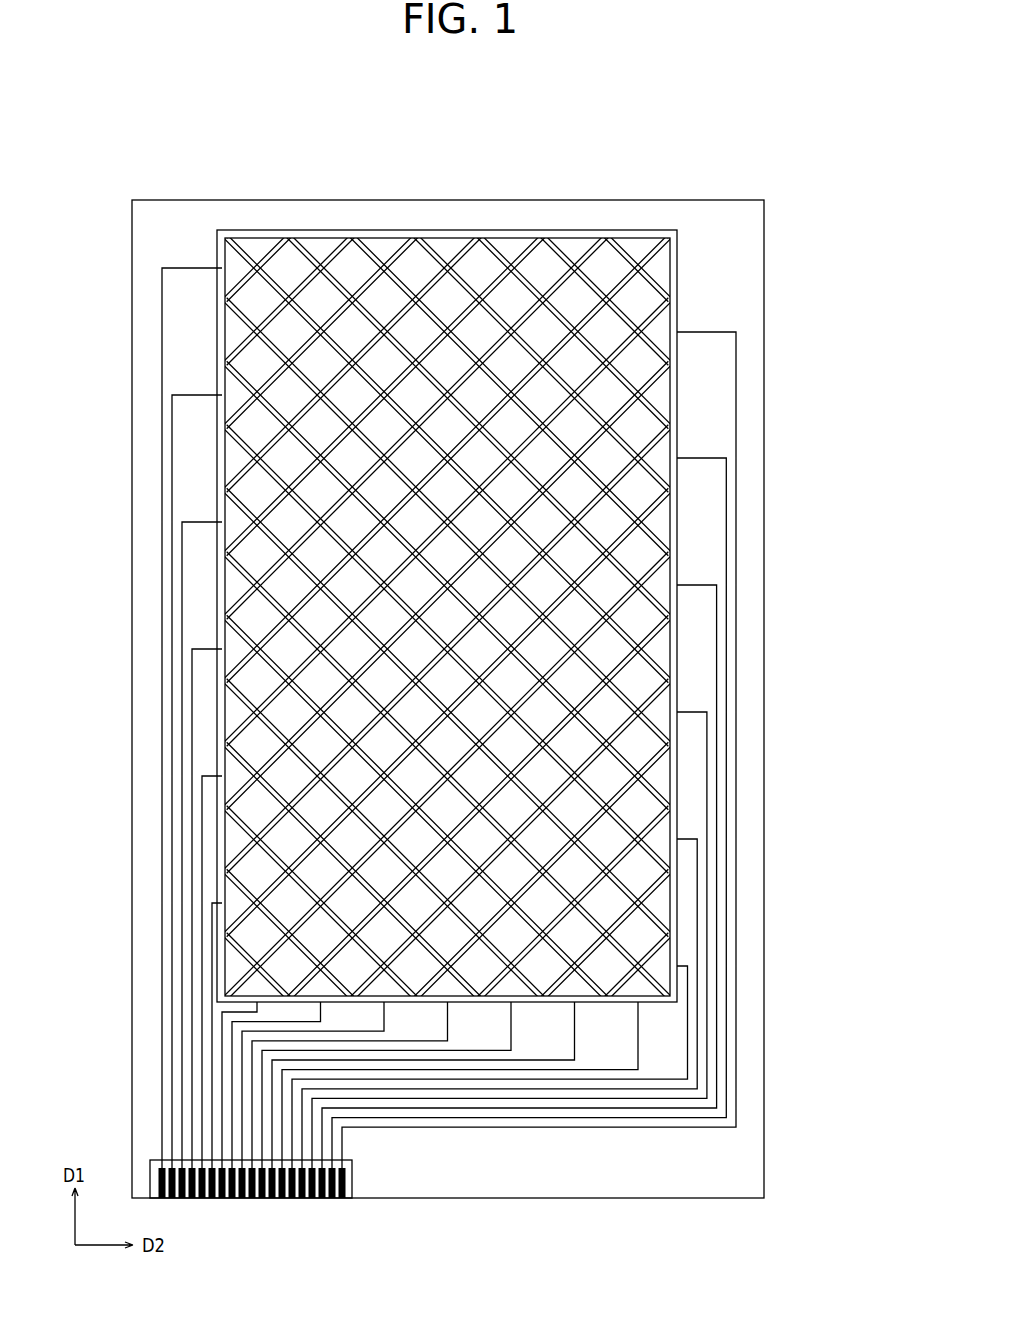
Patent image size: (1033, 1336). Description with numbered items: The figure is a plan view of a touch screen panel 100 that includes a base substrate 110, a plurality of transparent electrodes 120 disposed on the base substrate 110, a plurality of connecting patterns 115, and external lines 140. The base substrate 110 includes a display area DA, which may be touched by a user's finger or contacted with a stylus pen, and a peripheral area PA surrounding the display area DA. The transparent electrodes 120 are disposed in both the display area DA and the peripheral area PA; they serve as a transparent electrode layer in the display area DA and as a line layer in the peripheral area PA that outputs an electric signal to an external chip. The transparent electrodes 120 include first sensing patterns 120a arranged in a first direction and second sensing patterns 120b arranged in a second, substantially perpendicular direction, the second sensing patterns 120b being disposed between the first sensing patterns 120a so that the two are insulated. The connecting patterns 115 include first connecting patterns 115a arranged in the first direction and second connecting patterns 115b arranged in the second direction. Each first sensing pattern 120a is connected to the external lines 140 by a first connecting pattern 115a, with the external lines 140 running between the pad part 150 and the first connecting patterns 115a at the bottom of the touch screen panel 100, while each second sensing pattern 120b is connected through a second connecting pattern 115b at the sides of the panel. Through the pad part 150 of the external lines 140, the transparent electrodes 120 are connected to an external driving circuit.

The touch screen panel 100 is at (462, 94).
The base substrate 110 is at (537, 198).
The connecting patterns 115 is at (468, 147).
The first connecting patterns 115a is at (368, 266).
The second connecting patterns 115b is at (440, 264).
The transparent electrodes 120 is at (317, 147).
The first sensing patterns 120a is at (255, 290).
The second sensing patterns 120b is at (288, 253).
The external lines 140 is at (160, 355).
The pad part 150 is at (352, 1180).
The display area DA is at (616, 226).
The peripheral area PA is at (714, 224).